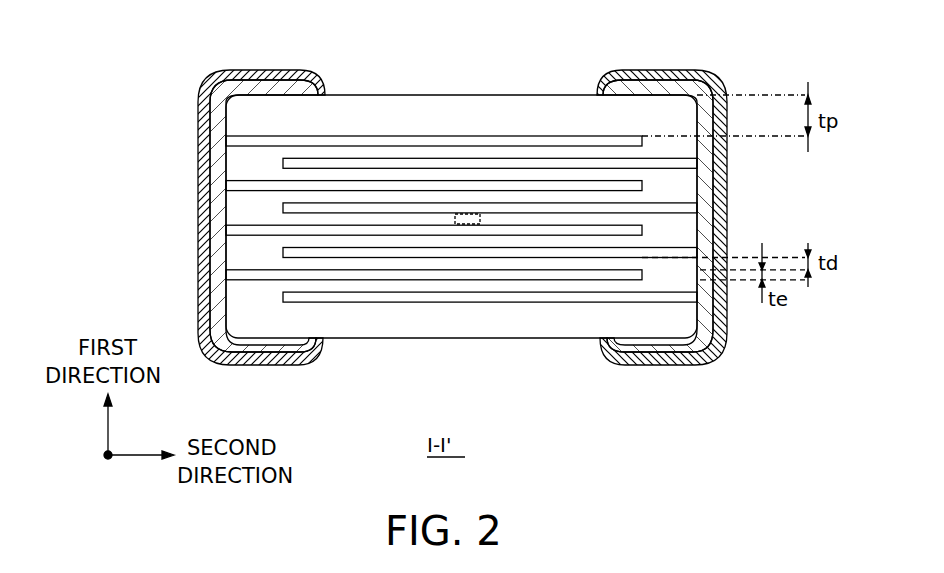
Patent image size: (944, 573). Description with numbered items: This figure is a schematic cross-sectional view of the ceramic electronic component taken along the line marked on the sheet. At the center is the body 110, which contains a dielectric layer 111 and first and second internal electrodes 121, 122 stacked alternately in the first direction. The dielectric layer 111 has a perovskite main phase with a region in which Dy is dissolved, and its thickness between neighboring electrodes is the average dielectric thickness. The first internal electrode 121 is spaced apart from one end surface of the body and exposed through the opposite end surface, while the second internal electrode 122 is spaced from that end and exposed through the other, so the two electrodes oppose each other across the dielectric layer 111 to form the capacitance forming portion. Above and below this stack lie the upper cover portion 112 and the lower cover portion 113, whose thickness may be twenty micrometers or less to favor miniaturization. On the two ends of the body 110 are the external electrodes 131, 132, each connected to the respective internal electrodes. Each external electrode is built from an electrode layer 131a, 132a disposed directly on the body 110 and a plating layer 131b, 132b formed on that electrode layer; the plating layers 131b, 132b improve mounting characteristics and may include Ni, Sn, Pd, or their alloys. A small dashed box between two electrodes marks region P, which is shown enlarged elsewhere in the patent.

The body 110 is at (397, 96).
The dielectric layer 111 is at (345, 175).
The upper cover portion 112 is at (467, 113).
The lower cover portion 113 is at (378, 320).
The first internal electrode 121 is at (532, 137).
The second internal electrode 122 is at (590, 159).
The external electrode 131 is at (184, 217).
The electrode layer 131a is at (205, 148).
The plating layer 131b is at (217, 175).
The external electrode 132 is at (739, 217).
The electrode layer 132a is at (707, 192).
The plating layer 132b is at (727, 215).
The region P is at (462, 225).